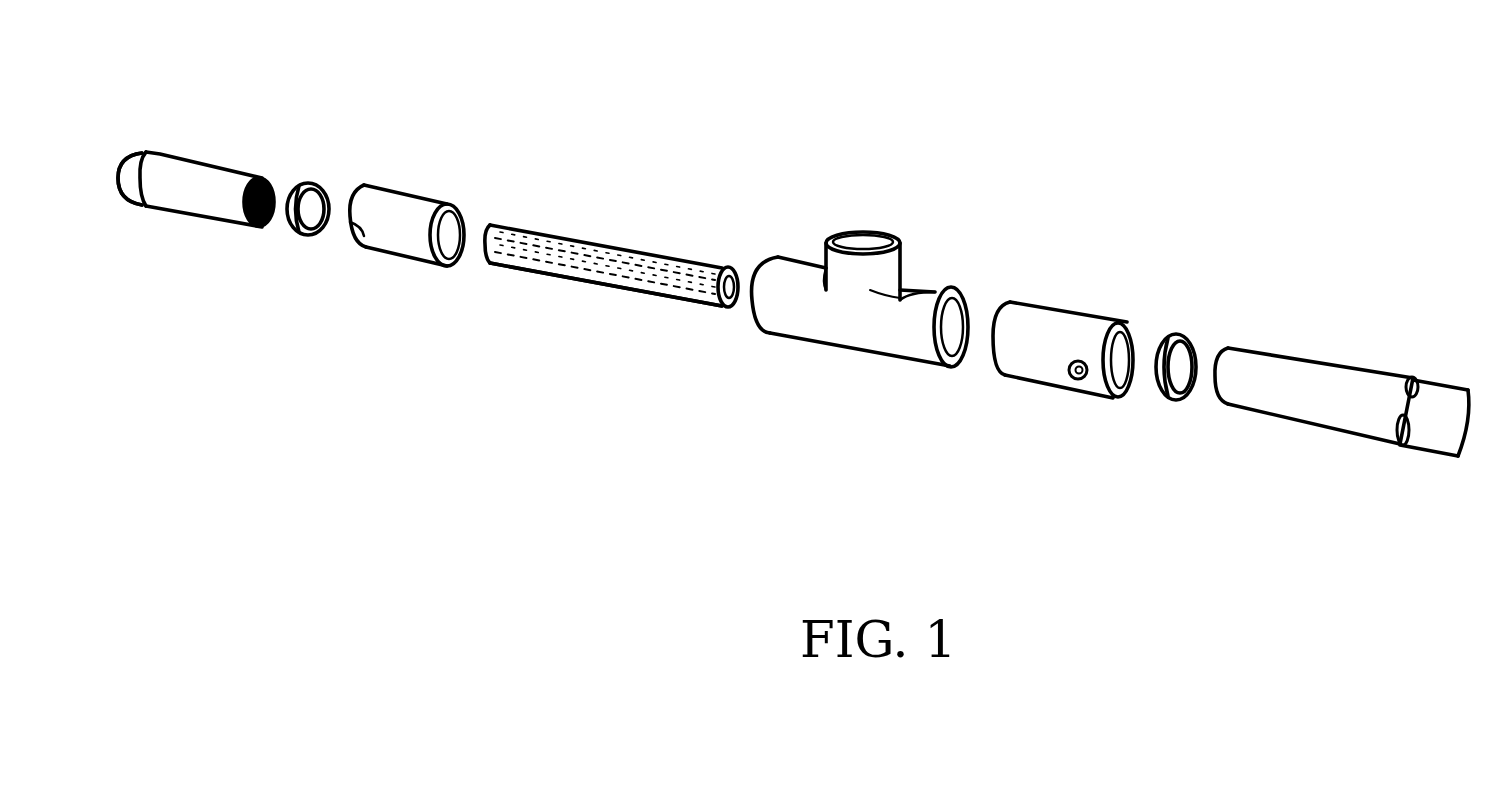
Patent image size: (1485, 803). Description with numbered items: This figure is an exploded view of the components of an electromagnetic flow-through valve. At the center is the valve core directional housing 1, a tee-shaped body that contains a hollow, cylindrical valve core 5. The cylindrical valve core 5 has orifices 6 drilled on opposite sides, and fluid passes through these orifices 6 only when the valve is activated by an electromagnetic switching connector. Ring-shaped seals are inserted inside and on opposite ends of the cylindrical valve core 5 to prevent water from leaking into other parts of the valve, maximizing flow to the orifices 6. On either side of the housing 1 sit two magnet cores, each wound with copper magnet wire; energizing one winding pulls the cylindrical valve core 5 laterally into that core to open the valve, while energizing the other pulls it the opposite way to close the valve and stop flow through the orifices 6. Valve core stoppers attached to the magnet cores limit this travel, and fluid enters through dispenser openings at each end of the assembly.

The valve core directional housing 1 is at (948, 280).
The cylindrical valve core 5 is at (631, 244).
The orifices 6 is at (664, 288).